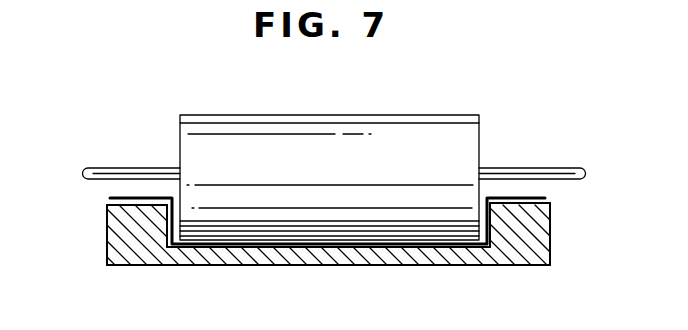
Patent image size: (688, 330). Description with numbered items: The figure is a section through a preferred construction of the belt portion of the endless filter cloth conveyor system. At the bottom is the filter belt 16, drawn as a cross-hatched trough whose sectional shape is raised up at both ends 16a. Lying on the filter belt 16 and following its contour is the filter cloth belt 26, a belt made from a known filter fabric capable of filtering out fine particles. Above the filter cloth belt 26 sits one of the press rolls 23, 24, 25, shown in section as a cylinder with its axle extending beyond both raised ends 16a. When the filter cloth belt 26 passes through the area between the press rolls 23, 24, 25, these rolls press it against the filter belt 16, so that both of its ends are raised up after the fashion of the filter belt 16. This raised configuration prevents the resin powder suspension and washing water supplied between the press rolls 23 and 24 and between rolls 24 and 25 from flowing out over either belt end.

The filter belt 16 is at (208, 255).
The raised ends of filter belt 16a is at (118, 235).
The filter cloth belt 26 is at (118, 198).
The press roll 23 is at (368, 132).
The press roll 24 is at (330, 196).
The press roll 25 is at (329, 228).